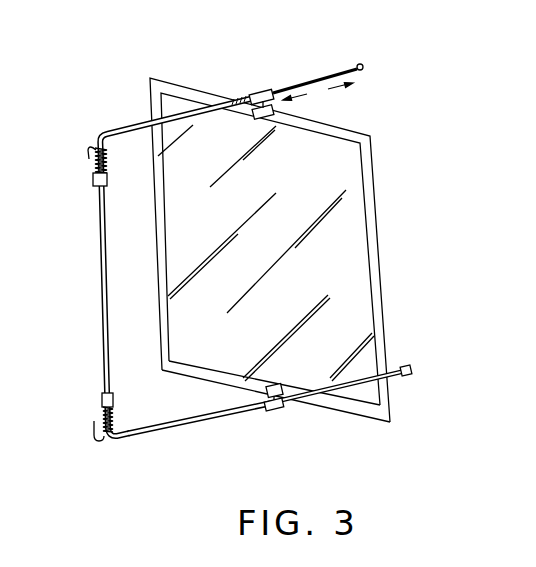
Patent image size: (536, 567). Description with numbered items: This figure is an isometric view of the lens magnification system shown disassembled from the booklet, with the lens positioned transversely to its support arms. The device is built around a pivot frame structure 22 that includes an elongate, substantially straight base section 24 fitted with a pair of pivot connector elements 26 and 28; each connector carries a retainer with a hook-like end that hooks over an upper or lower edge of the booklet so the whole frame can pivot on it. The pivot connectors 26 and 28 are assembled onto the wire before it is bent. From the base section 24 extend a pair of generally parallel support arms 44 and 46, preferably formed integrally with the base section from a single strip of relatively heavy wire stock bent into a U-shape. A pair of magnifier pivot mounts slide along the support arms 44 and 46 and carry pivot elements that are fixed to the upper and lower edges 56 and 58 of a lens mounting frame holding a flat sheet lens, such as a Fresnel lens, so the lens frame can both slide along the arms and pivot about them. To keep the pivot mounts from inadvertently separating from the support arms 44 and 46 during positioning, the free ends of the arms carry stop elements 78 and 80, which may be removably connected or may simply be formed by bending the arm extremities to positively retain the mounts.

The pivot frame structure 22 is at (254, 260).
The base section 24 is at (100, 276).
The pivot connector element 26 is at (94, 186).
The pivot connector element 28 is at (102, 394).
The support arm 44 is at (134, 126).
The support arm 46 is at (163, 438).
The upper edge of lens mounting frame 56 is at (355, 135).
The lower edge of lens mounting frame 58 is at (352, 404).
The stop element 78 is at (357, 63).
The stop element 80 is at (409, 369).